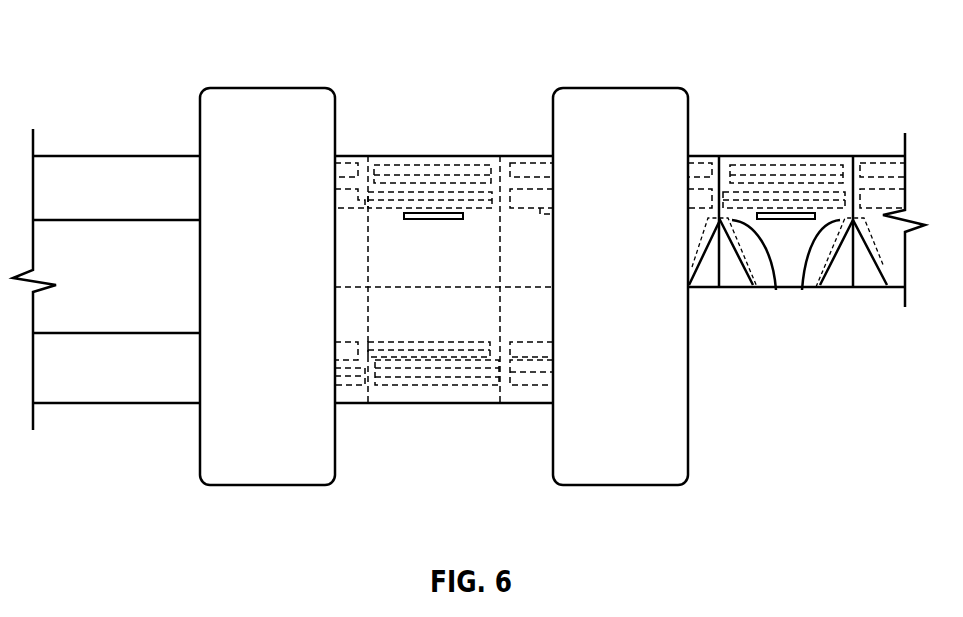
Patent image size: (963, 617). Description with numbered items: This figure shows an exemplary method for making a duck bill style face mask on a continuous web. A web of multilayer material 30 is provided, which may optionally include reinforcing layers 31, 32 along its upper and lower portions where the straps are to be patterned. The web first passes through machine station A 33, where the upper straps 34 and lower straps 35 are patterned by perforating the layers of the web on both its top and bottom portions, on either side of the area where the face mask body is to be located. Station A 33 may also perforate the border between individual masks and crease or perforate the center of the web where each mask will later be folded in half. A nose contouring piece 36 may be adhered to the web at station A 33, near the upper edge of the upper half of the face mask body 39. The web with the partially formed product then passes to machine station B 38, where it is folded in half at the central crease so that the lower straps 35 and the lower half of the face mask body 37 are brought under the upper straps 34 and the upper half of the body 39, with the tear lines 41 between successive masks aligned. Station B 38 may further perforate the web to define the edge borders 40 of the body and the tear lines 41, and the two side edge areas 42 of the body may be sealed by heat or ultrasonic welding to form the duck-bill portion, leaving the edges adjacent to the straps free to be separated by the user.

The web of multilayer material 30 is at (160, 155).
The reinforcing layer 31 is at (88, 175).
The reinforcing layer 32 is at (148, 403).
The machine station A 33 is at (268, 87).
The upper straps 34 is at (418, 158).
The lower straps 35 is at (422, 396).
The nose contouring piece 36 is at (435, 212).
The lower half of the face mask body 37 is at (442, 321).
The machine station B 38 is at (620, 87).
The upper half of the face mask body 39 is at (810, 270).
The edge borders 40 is at (740, 263).
The tear lines 41 is at (730, 160).
The side edge areas 42 is at (802, 290).